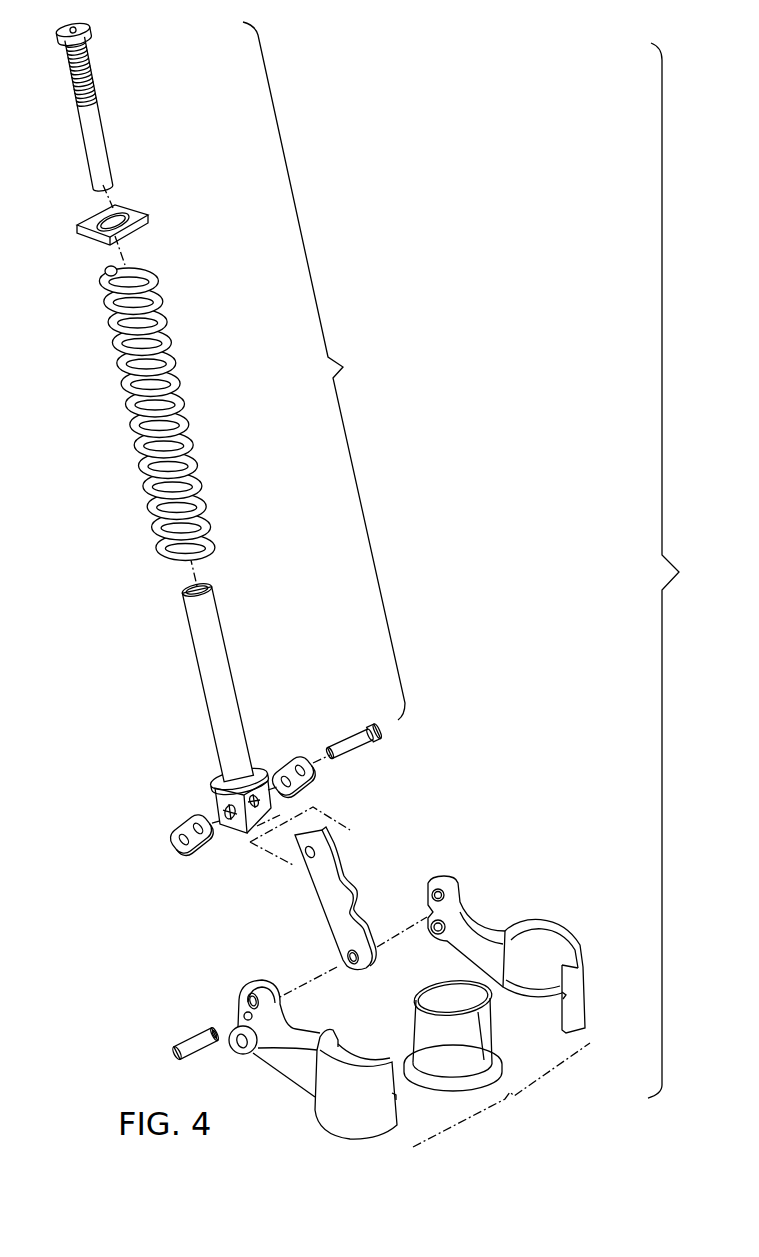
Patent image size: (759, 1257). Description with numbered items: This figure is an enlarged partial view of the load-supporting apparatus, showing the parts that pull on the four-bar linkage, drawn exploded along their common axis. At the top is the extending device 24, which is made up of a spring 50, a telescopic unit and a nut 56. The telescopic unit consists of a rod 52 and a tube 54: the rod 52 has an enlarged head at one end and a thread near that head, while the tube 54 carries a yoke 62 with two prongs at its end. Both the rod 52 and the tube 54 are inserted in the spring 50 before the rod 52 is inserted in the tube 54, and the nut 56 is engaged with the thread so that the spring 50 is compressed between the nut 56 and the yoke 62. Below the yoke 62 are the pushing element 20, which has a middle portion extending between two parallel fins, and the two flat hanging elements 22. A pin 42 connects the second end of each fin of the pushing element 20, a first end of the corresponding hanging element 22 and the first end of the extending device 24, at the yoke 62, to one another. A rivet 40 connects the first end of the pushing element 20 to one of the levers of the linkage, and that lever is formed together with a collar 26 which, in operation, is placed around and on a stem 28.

The pushing element 20 is at (327, 903).
The hanging element 22 is at (287, 763).
The extending device 24 is at (324, 371).
The collar 26 is at (409, 1011).
The stem 28 is at (427, 1023).
The rivet 40 is at (192, 1042).
The pin 42 is at (350, 742).
The spring 50 is at (168, 350).
The rod 52 is at (98, 146).
The tube 54 is at (218, 660).
The nut 56 is at (140, 235).
The yoke 62 is at (215, 772).